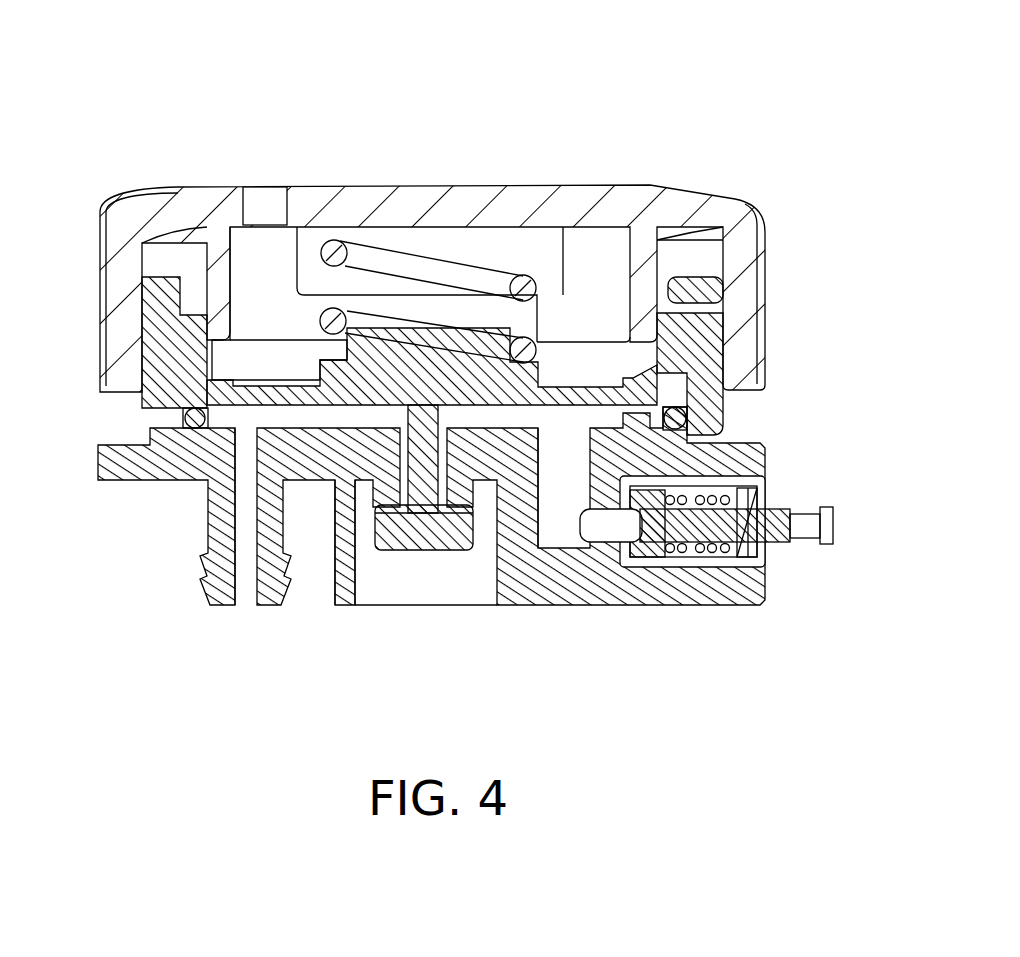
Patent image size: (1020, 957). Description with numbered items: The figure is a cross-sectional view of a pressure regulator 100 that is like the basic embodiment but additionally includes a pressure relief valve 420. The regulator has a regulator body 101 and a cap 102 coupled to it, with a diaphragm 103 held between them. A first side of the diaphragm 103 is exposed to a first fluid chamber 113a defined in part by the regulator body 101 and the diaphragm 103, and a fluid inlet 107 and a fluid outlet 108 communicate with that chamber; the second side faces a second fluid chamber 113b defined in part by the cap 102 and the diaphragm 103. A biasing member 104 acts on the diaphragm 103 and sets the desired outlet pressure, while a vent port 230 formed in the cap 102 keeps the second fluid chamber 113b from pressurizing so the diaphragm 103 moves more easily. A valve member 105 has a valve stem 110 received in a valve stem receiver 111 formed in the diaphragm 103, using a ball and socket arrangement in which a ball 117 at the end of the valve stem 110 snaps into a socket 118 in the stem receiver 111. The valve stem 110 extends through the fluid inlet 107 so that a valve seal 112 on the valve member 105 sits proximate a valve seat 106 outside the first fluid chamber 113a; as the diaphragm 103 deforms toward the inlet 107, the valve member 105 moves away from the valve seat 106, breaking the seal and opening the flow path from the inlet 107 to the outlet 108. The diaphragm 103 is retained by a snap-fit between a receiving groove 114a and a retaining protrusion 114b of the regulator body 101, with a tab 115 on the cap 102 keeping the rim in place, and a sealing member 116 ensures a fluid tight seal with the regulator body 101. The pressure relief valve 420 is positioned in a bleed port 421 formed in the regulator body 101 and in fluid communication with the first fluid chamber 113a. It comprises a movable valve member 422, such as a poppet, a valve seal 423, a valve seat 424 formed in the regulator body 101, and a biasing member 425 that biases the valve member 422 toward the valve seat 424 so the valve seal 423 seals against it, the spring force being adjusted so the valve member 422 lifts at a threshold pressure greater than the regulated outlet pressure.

The pressure regulator 100 is at (676, 95).
The regulator body 101 is at (582, 597).
The cap 102 is at (732, 200).
The diaphragm 103 is at (513, 327).
The biasing member 104 is at (332, 242).
The valve member 105 is at (428, 545).
The valve seat 106 is at (375, 490).
The fluid inlet 107 is at (367, 600).
The fluid outlet 108 is at (243, 600).
The valve stem 110 is at (403, 413).
The valve stem receiver 111 is at (543, 373).
The valve seal 112 is at (487, 500).
The first fluid chamber 113a is at (253, 417).
The second fluid chamber 113b is at (633, 235).
The receiving groove 114a is at (680, 450).
The retaining protrusion 114b is at (672, 296).
The tab 115 is at (215, 273).
The sealing member 116 is at (185, 413).
The ball 117 is at (404, 385).
The socket 118 is at (415, 333).
The vent port 230 is at (262, 197).
The pressure relief valve 420 is at (790, 582).
The bleed port 421 is at (547, 513).
The movable valve member 422 is at (662, 555).
The valve seal 423 is at (630, 555).
The valve seat 424 is at (710, 480).
The biasing member 425 is at (722, 555).